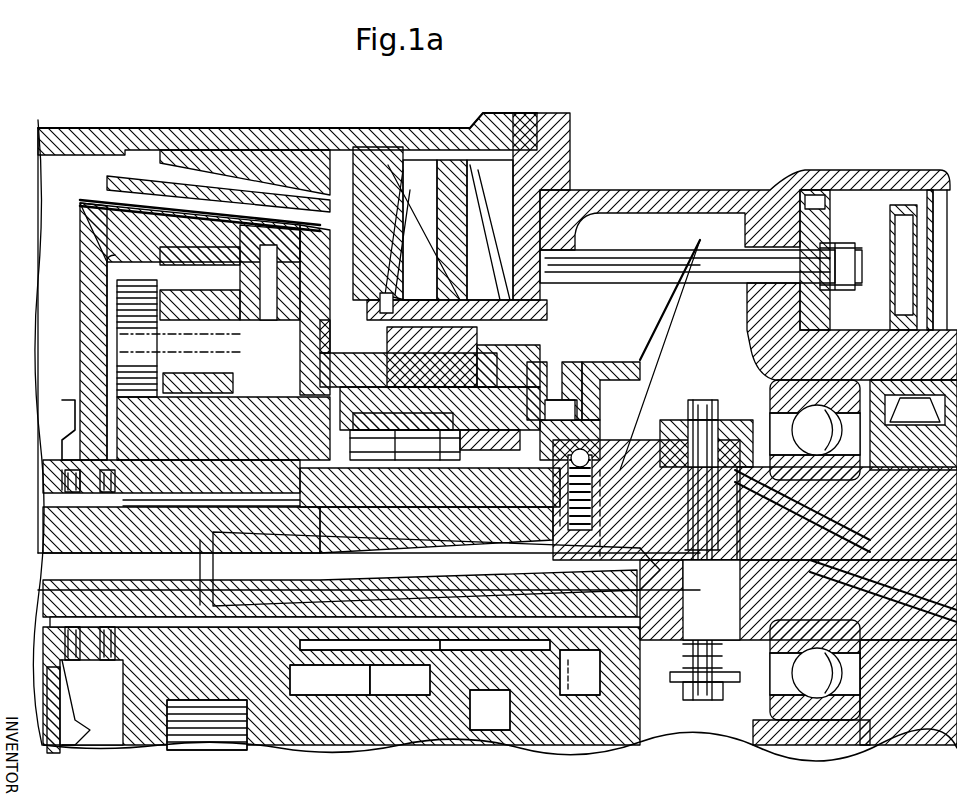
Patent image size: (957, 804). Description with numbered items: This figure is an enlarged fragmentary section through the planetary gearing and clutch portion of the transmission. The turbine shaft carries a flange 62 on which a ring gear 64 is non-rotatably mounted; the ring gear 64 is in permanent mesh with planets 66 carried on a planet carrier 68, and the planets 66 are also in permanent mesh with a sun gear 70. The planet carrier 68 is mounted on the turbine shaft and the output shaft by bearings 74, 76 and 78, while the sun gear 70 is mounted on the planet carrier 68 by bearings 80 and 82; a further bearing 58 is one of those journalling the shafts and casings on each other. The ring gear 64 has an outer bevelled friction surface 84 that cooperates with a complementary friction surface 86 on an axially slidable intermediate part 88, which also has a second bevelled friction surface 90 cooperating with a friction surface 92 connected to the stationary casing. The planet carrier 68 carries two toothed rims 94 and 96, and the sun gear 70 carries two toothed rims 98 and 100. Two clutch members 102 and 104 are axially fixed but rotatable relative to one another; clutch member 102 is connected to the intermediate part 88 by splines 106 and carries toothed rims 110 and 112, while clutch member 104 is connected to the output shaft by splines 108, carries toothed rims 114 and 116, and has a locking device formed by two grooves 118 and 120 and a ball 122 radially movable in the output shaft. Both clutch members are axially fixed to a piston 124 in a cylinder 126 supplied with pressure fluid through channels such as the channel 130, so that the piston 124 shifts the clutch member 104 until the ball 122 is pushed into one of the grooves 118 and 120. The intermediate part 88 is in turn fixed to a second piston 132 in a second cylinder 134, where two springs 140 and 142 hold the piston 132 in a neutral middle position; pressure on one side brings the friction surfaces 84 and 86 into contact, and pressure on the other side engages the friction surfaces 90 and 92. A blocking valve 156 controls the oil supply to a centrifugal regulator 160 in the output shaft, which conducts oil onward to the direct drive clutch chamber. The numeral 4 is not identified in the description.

The piston rod 4 is at (369, 569).
The bearing 58 is at (65, 512).
The flange 62 is at (72, 440).
The ring gear 64 is at (92, 224).
The planets 66 is at (243, 290).
The planet carrier 68 is at (138, 312).
The sun gear 70 is at (258, 402).
The bearing 74 is at (110, 500).
The bearing 76 is at (148, 505).
The bearing 78 is at (450, 458).
The bearing 80 is at (252, 470).
The bearing 82 is at (412, 465).
The outer bevelled friction surface 84 is at (86, 200).
The friction surface 86 is at (118, 150).
The intermediate part 88 is at (322, 325).
The second bevelled friction surface 90 is at (168, 182).
The friction surface 92 is at (262, 178).
The toothed rim 94 is at (325, 395).
The toothed rim 96 is at (488, 460).
The toothed rim 98 is at (308, 455).
The toothed rim 100 is at (420, 442).
The clutch member 102 is at (547, 380).
The clutch member 104 is at (577, 428).
The splines 106 is at (480, 383).
The splines 108 is at (545, 460).
The toothed rim 110 is at (262, 712).
The toothed rim 112 is at (340, 690).
The toothed rim 114 is at (390, 690).
The toothed rim 116 is at (476, 676).
The groove 118 is at (590, 648).
The groove 120 is at (582, 690).
The ball 122 is at (598, 452).
The piston 124 is at (820, 222).
The cylinder 126 is at (880, 192).
The channel 130 is at (701, 266).
The second piston 132 is at (492, 178).
The second cylinder 134 is at (418, 178).
The spring 140 is at (528, 194).
The spring 142 is at (405, 215).
The blocking valve 156 is at (798, 562).
The centrifugal regulator 160 is at (740, 418).